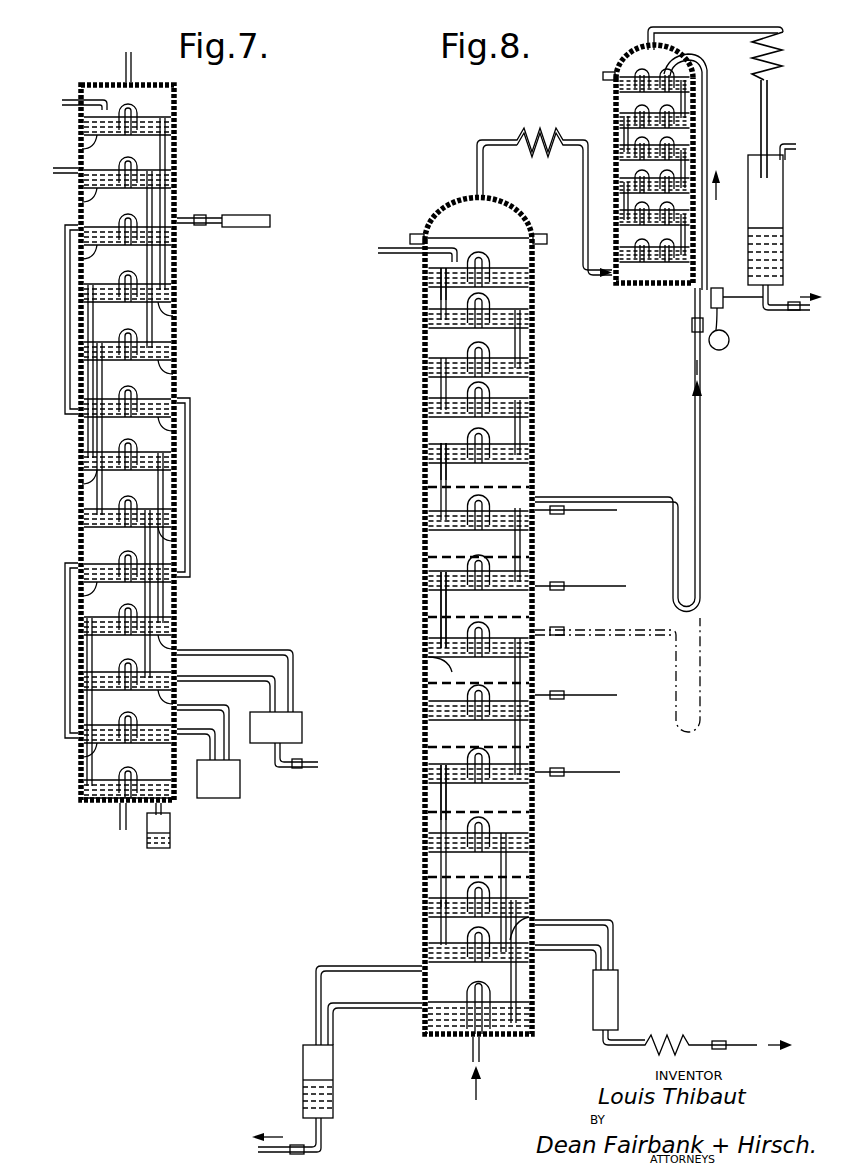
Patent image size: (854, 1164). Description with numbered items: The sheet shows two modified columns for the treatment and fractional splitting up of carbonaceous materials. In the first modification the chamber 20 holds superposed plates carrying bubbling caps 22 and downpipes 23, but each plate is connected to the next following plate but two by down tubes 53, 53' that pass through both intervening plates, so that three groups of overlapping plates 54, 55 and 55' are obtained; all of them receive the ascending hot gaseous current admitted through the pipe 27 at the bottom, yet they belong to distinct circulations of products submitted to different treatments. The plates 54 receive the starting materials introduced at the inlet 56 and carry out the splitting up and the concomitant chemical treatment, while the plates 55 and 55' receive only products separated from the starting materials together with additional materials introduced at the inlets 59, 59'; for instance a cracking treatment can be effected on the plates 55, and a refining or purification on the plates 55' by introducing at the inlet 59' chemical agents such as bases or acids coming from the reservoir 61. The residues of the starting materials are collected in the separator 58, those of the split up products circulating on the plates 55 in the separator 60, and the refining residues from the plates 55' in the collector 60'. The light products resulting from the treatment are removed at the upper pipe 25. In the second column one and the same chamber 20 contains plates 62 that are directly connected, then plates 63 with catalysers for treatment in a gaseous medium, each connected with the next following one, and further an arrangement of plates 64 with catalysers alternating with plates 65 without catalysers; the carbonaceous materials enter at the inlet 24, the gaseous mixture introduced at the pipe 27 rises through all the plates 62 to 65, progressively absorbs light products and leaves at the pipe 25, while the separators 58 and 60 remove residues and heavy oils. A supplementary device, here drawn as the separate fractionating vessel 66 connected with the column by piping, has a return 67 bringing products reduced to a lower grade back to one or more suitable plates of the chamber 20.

In FIG. 7, the chamber 20 is at (178, 268).
In FIG. 8, the chamber 20 is at (537, 470).
In FIG. 8, the bubbling caps 22 is at (493, 297).
In FIG. 8, the downpipes 23 is at (521, 346).
In FIG. 8, the inlet 24 is at (398, 250).
In FIG. 7, the pipe 25 is at (125, 54).
In FIG. 8, the pipe 25 is at (476, 162).
In FIG. 7, the pipe 27 is at (117, 815).
In FIG. 7, the down tubes 53 is at (126, 452).
In FIG. 7, the down tubes 53' is at (130, 481).
In FIG. 7, the plates 54 is at (78, 139).
In FIG. 8, the plates 54 is at (438, 662).
In FIG. 7, the plates 55 is at (132, 447).
In FIG. 7, the plates 55' is at (133, 505).
In FIG. 7, the inlet 56 is at (96, 100).
In FIG. 7, the separator 58 is at (158, 850).
In FIG. 8, the separator 58 is at (334, 1073).
In FIG. 7, the inlet 59 is at (57, 186).
In FIG. 7, the inlet 59' is at (216, 204).
In FIG. 7, the separator 60 is at (259, 709).
In FIG. 8, the separator 60 is at (663, 987).
In FIG. 7, the separator 60' is at (218, 774).
In FIG. 7, the reservoir 61 is at (265, 218).
In FIG. 8, the plates 62 is at (438, 336).
In FIG. 8, the plates 63 is at (438, 530).
In FIG. 8, the plates 64 is at (428, 600).
In FIG. 8, the plates 65 is at (428, 921).
In FIG. 8, the condenser column 66 is at (650, 290).
In FIG. 8, the return 67 is at (701, 400).